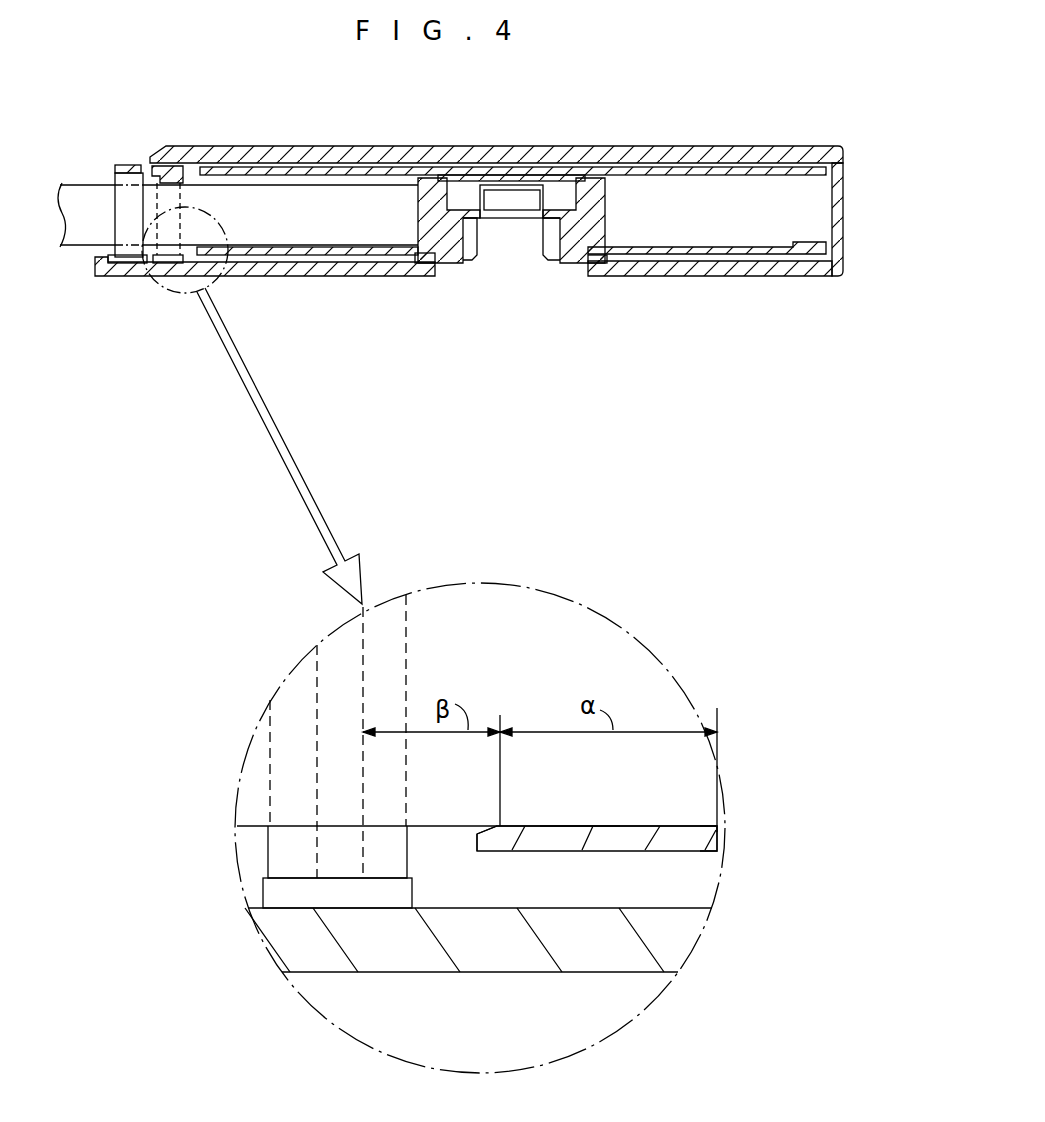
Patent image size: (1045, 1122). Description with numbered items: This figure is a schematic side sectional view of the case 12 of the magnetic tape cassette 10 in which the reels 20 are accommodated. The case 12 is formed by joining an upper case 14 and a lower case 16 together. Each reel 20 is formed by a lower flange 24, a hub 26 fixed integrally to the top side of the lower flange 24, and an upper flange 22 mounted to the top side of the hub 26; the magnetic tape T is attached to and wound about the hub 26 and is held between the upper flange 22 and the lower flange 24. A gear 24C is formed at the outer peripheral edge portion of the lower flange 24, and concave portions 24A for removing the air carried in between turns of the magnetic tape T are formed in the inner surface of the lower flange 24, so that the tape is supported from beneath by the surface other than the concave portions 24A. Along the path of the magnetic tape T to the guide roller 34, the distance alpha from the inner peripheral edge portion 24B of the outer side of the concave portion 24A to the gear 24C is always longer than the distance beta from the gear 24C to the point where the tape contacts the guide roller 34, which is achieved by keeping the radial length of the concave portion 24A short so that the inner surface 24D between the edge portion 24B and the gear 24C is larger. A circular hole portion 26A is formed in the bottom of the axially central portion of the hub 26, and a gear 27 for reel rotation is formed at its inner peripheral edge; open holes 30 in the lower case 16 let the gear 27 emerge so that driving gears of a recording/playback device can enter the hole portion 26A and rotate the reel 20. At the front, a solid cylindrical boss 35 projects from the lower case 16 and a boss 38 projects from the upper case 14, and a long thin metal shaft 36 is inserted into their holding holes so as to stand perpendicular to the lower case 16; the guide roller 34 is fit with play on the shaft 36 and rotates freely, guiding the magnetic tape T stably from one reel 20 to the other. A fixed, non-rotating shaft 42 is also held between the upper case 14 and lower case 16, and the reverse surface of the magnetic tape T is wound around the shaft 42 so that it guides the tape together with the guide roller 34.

The magnetic tape cassette 10 is at (640, 100).
The case 12 is at (429, 146).
The upper case 14 is at (843, 175).
The lower case 16 is at (793, 274).
The reel 20 is at (530, 165).
The upper flange 22 is at (254, 152).
The lower flange 24 is at (653, 252).
The concave portion 24A is at (240, 247).
The inner peripheral edge portion 24B is at (707, 855).
The gear 24C is at (500, 838).
The inner surface 24D is at (580, 826).
The hub 26 is at (412, 230).
The hole portion 26A is at (527, 222).
The gear for reel rotation 27 is at (472, 246).
The open hole 30 is at (436, 264).
The guide roller 34 is at (128, 168).
The boss 35 is at (165, 265).
The shaft 36 is at (202, 160).
The boss 38 is at (168, 150).
The shaft 42 is at (117, 222).
The magnetic tape T is at (78, 207).